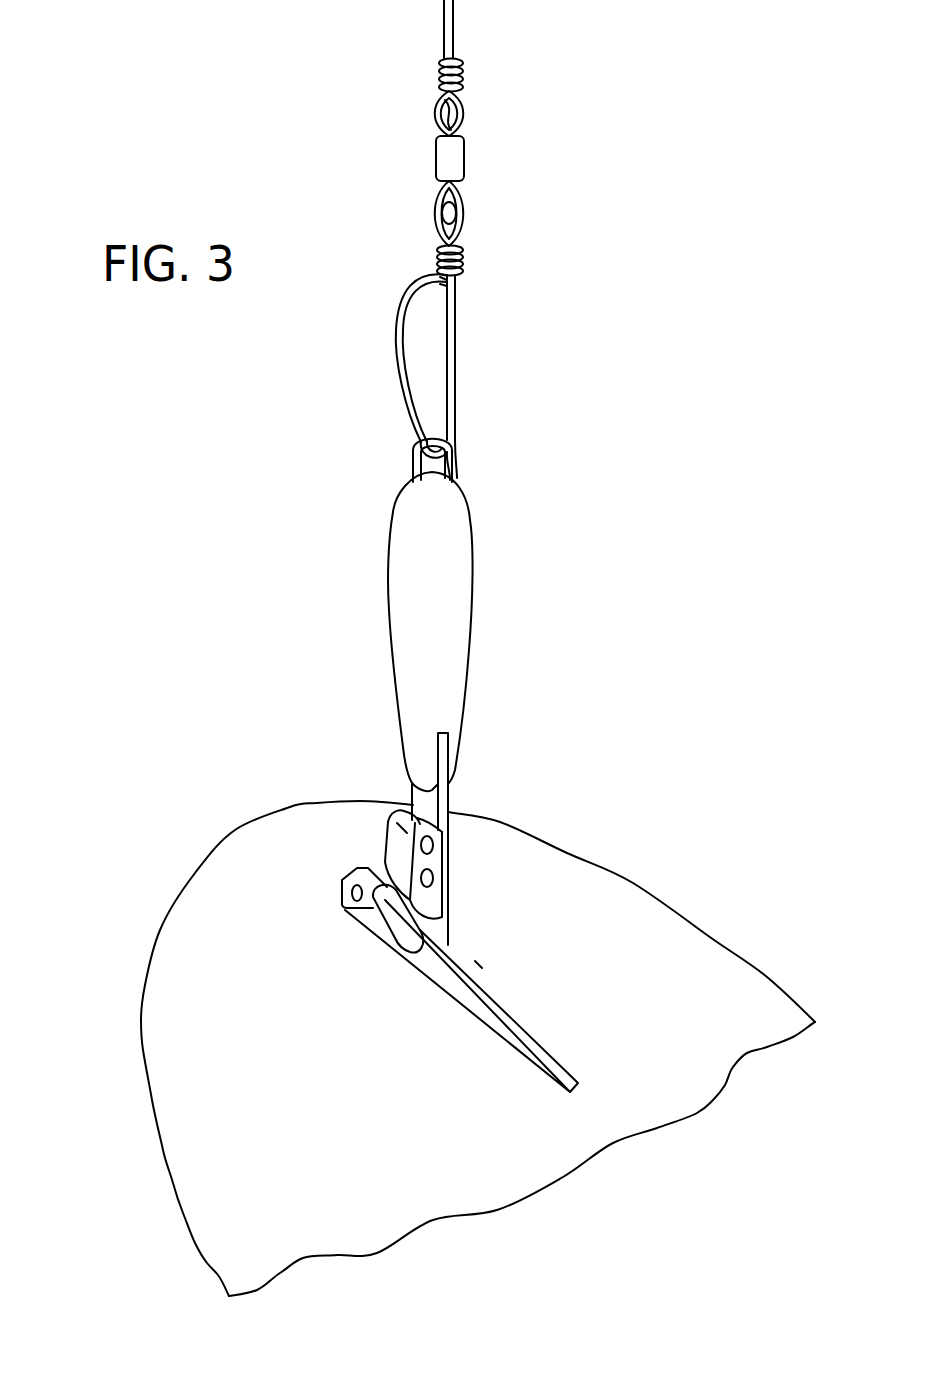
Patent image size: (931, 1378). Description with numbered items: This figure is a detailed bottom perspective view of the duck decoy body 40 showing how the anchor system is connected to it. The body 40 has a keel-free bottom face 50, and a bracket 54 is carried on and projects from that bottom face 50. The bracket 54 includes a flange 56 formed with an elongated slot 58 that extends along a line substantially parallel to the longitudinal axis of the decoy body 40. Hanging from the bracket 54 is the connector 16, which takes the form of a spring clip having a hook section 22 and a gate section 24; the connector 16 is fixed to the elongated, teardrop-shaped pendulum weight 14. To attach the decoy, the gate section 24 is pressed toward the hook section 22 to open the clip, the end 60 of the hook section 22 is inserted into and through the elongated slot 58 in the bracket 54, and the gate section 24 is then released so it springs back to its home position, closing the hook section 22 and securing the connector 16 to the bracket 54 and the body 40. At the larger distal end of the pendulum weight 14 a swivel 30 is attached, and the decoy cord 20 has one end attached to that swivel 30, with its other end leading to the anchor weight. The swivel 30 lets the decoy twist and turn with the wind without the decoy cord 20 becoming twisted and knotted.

The decoy cord 20 is at (443, 23).
The swivel 30 is at (457, 332).
The pendulum weight 14 is at (460, 598).
The connector 16 is at (446, 803).
The hook section 22 is at (448, 912).
The gate section 24 is at (387, 862).
The end of the hook section 60 is at (340, 910).
The elongated slot 58 is at (423, 948).
The bracket 54 is at (384, 953).
The flange 56 is at (445, 972).
The bottom face 50 is at (663, 1003).
The body 40 is at (217, 1276).